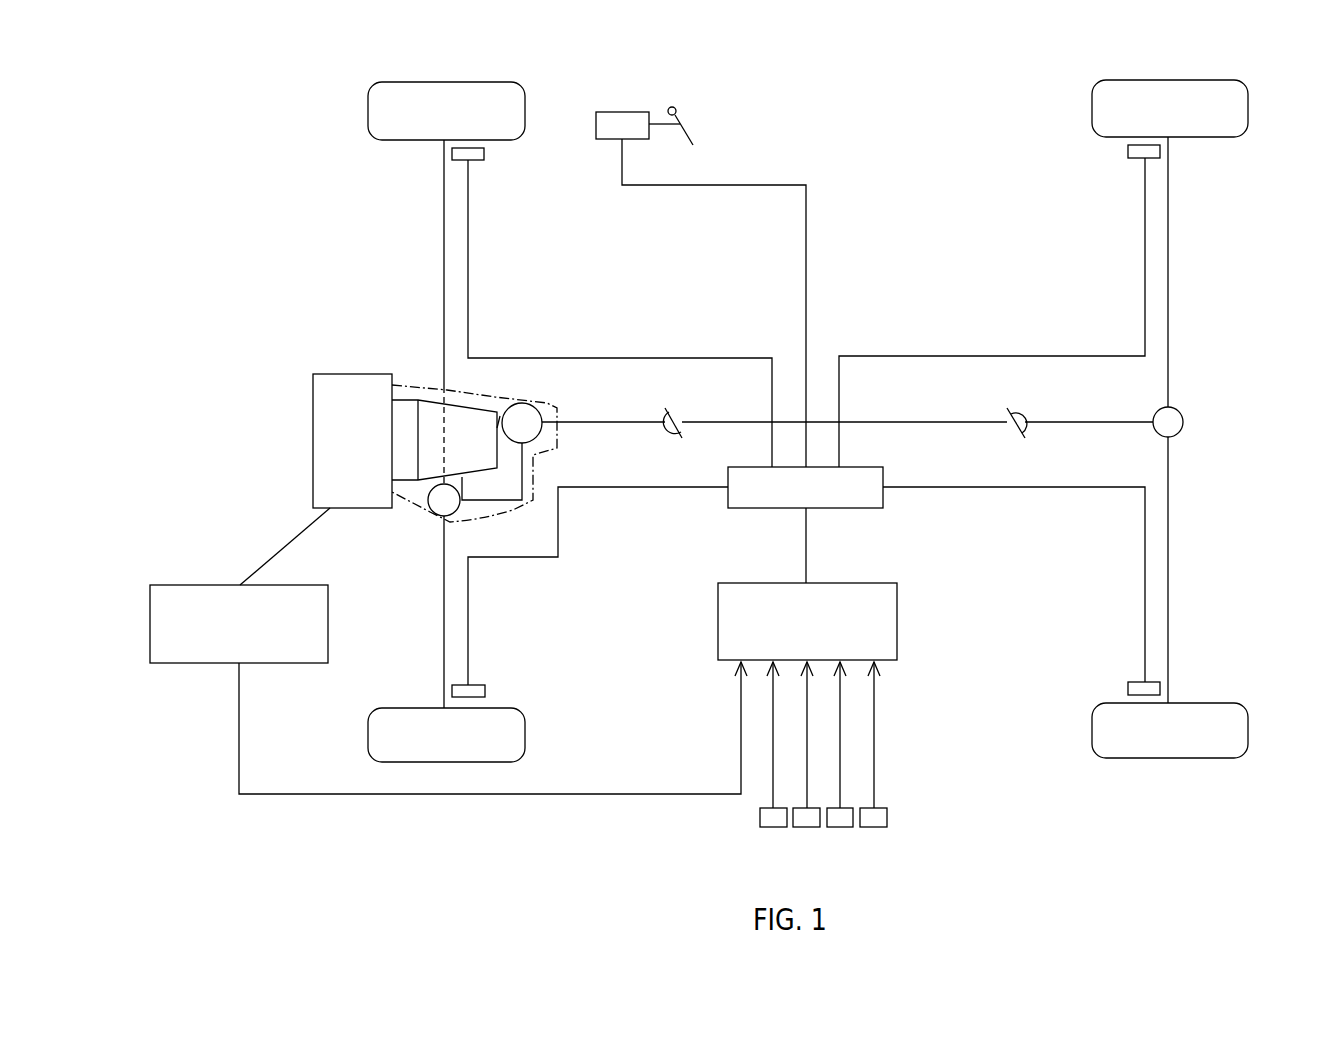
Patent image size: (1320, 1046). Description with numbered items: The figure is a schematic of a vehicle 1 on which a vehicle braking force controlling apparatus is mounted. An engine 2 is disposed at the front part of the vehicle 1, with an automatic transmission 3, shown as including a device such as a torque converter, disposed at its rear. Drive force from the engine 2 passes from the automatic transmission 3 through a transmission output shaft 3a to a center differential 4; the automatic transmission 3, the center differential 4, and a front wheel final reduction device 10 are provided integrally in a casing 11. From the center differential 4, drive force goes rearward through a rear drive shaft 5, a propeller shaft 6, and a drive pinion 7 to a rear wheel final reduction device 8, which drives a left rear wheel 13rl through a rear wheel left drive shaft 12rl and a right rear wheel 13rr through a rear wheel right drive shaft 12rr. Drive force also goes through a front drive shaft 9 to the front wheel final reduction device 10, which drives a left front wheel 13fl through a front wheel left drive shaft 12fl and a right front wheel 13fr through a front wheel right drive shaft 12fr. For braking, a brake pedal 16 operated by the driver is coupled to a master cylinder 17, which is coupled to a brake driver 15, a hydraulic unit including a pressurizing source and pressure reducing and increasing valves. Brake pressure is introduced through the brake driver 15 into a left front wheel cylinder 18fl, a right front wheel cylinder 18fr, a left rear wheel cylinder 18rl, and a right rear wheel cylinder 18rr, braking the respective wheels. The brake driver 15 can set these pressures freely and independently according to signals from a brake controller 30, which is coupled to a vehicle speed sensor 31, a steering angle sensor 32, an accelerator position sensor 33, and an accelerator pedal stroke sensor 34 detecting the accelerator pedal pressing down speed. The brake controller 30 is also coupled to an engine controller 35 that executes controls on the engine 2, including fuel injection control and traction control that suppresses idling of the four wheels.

The vehicle 1 is at (921, 166).
The engine 2 is at (313, 442).
The automatic transmission 3 is at (466, 505).
The transmission output shaft 3a is at (500, 418).
The center differential 4 is at (527, 403).
The rear drive shaft 5 is at (635, 421).
The propeller shaft 6 is at (939, 421).
The drive pinion 7 is at (1087, 421).
The rear wheel final reduction device 8 is at (1183, 422).
The front drive shaft 9 is at (502, 503).
The front wheel final reduction device 10 is at (430, 513).
The casing 11 is at (563, 400).
The front wheel right drive shaft 12fr is at (444, 180).
The front wheel left drive shaft 12fl is at (444, 598).
The rear wheel right drive shaft 12rr is at (1168, 210).
The rear wheel left drive shaft 12rl is at (1168, 602).
The right front wheel 13fr is at (368, 108).
The left front wheel 13fl is at (368, 733).
The right rear wheel 13rr is at (1248, 108).
The left rear wheel 13rl is at (1248, 730).
The brake driver 15 is at (853, 510).
The brake pedal 16 is at (692, 127).
The master cylinder 17 is at (622, 112).
The right front wheel cylinder 18fr is at (484, 154).
The left front wheel cylinder 18fl is at (485, 691).
The right rear wheel cylinder 18rr is at (1128, 152).
The left rear wheel cylinder 18rl is at (1128, 689).
The brake controller 30 is at (897, 620).
The vehicle speed sensor 31 is at (872, 828).
The steering angle sensor 32 is at (839, 828).
The accelerator position sensor 33 is at (805, 828).
The accelerator pedal stroke sensor 34 is at (772, 828).
The engine controller 35 is at (190, 585).